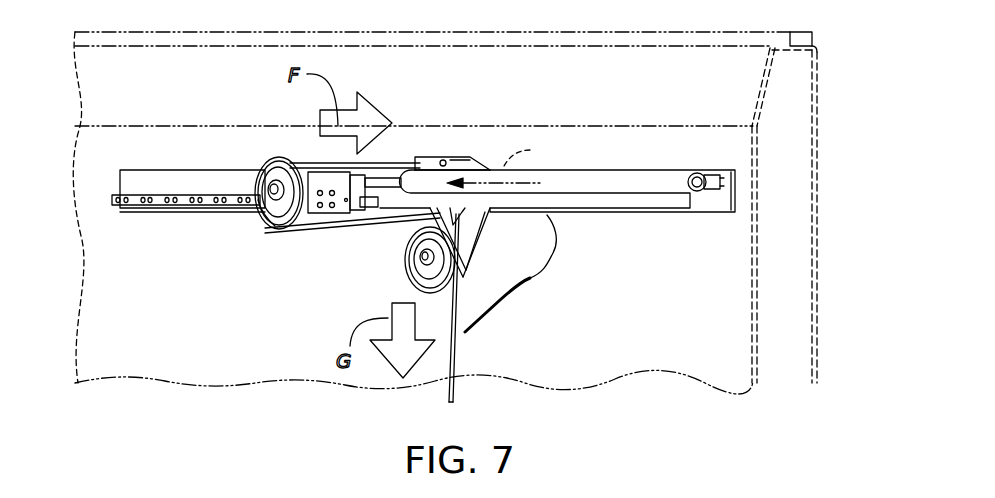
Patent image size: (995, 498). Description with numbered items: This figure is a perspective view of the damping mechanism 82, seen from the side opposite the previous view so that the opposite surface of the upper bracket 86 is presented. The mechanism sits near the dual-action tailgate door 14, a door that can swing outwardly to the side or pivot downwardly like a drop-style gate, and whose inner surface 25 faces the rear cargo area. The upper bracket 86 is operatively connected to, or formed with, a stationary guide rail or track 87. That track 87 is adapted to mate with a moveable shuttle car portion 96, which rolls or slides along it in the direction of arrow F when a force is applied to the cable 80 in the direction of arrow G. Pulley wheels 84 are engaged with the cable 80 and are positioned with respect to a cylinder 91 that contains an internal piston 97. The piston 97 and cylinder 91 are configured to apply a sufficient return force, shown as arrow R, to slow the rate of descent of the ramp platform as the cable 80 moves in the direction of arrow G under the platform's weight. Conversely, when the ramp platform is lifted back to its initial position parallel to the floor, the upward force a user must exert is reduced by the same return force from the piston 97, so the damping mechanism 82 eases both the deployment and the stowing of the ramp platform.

The dual-action tailgate door 14 is at (838, 102).
The inner surface 25 is at (722, 237).
The cable 80 is at (454, 368).
The damping mechanism 82 is at (512, 273).
The pulley wheels 84 is at (266, 217).
The upper bracket 86 is at (618, 203).
The stationary guide rail or track 87 is at (155, 200).
The cylinder 91 is at (594, 185).
The moveable shuttle car portion 96 is at (333, 178).
The internal piston 97 is at (408, 158).